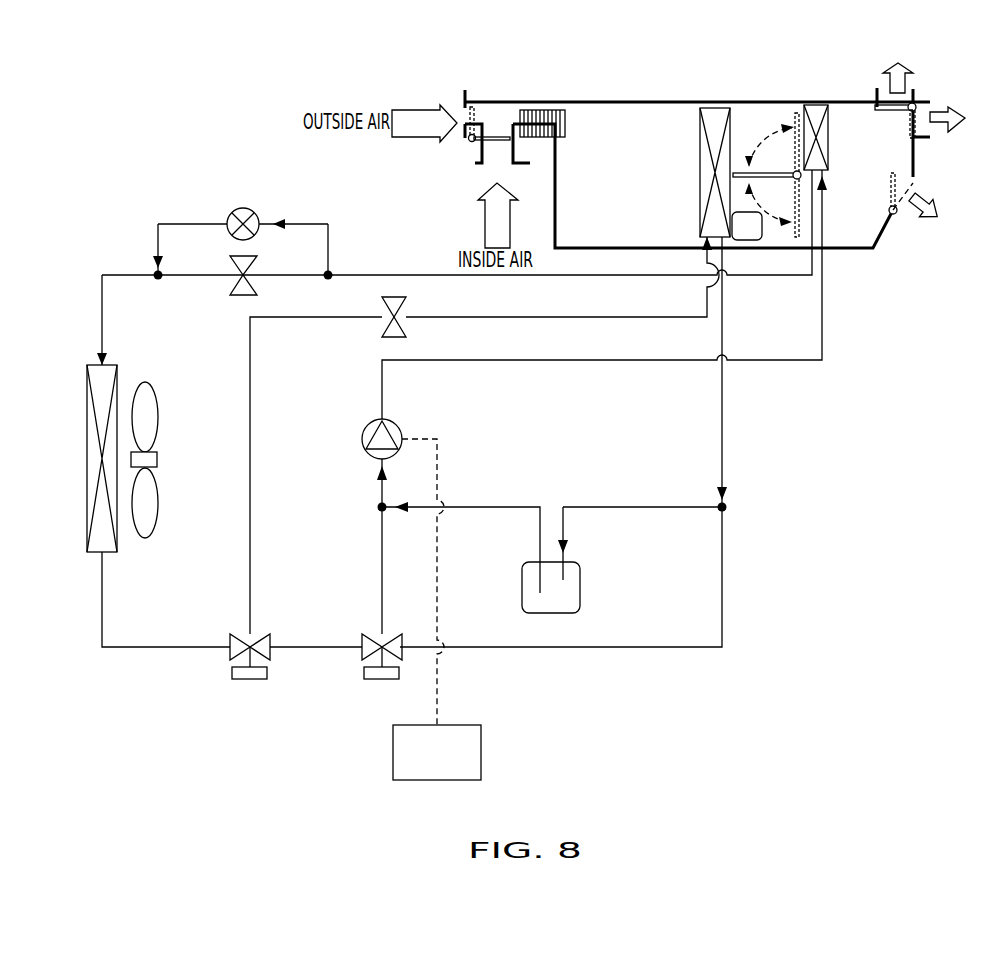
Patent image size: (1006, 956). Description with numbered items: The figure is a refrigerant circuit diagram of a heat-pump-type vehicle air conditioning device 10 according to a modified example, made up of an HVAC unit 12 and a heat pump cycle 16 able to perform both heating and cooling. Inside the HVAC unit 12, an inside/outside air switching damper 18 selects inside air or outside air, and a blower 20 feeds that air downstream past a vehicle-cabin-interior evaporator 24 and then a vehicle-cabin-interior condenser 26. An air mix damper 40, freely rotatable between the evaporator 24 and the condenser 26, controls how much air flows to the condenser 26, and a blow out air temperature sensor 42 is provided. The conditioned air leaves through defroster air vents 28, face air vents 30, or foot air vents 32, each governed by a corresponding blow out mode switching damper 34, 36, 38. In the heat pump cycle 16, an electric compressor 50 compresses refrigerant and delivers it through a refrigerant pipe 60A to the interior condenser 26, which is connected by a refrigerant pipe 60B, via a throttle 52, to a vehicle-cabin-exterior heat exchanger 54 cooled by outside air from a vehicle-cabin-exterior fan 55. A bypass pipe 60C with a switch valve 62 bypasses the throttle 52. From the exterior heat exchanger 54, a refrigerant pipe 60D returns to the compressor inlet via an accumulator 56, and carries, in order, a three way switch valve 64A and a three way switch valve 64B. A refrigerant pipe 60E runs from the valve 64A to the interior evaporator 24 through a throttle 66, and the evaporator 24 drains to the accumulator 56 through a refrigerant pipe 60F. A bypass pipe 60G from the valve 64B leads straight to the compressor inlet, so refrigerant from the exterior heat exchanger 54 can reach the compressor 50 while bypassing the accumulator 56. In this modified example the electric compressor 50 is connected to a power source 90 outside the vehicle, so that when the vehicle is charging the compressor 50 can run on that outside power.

The vehicle air conditioning device 10 is at (424, 87).
The HVAC unit 12 is at (622, 97).
The heat pump cycle 16 is at (321, 194).
The inside/outside air switching damper 18 is at (493, 137).
The blower 20 is at (567, 123).
The vehicle-cabin-interior evaporator 24 is at (698, 173).
The vehicle-cabin-interior condenser 26 is at (830, 138).
The defroster air vent 28 is at (913, 104).
The face air vent 30 is at (932, 107).
The foot air vent 32 is at (898, 215).
The blow out mode switching damper 34 is at (888, 103).
The blow out mode switching damper 36 is at (918, 129).
The blow out mode switching damper 38 is at (890, 185).
The air mix damper 40 is at (744, 160).
The blow out air temperature sensor 42 is at (743, 248).
The electric compressor 50 is at (360, 438).
The throttle 52 is at (228, 287).
The vehicle-cabin-exterior heat exchanger 54 is at (87, 440).
The vehicle-cabin-exterior fan 55 is at (157, 458).
The accumulator 56 is at (582, 580).
The refrigerant pipe 60A is at (565, 363).
The refrigerant pipe 60B is at (415, 273).
The bypass pipe 60C is at (183, 222).
The refrigerant pipe 60D is at (658, 505).
The refrigerant pipe 60E is at (252, 538).
The refrigerant pipe 60F is at (725, 409).
The bypass pipe 60G is at (380, 577).
The switch valve 62 is at (242, 207).
The three way switch valve 64A is at (250, 680).
The three way switch valve 64B is at (362, 670).
The throttle 66 is at (385, 328).
The power source 90 is at (482, 753).